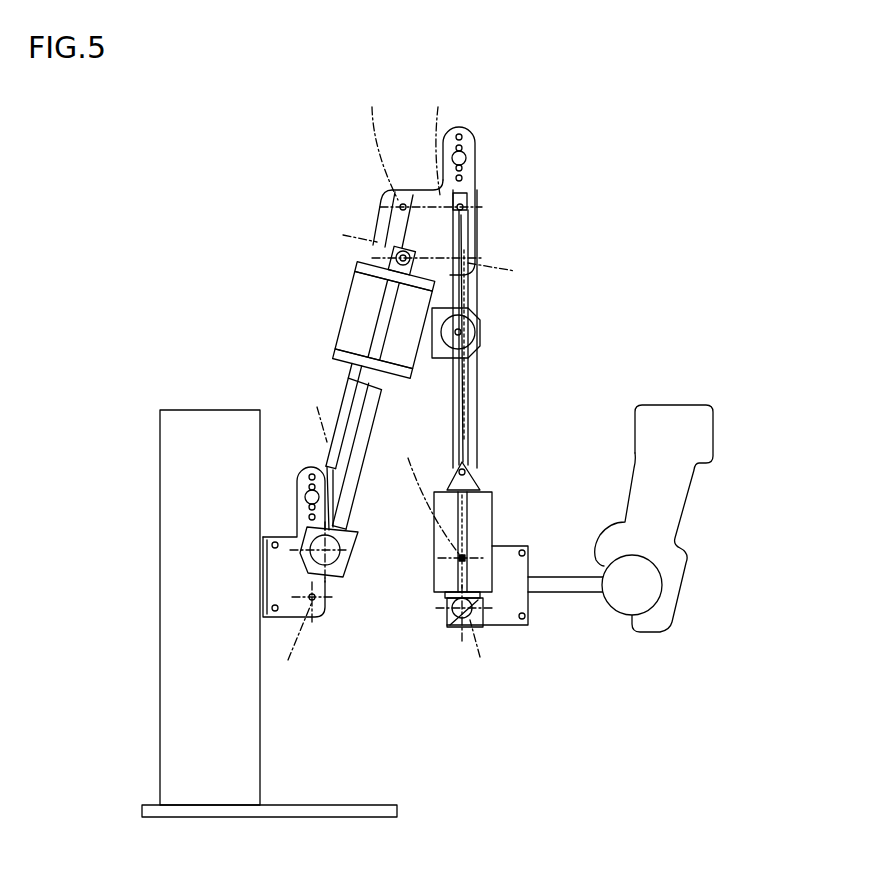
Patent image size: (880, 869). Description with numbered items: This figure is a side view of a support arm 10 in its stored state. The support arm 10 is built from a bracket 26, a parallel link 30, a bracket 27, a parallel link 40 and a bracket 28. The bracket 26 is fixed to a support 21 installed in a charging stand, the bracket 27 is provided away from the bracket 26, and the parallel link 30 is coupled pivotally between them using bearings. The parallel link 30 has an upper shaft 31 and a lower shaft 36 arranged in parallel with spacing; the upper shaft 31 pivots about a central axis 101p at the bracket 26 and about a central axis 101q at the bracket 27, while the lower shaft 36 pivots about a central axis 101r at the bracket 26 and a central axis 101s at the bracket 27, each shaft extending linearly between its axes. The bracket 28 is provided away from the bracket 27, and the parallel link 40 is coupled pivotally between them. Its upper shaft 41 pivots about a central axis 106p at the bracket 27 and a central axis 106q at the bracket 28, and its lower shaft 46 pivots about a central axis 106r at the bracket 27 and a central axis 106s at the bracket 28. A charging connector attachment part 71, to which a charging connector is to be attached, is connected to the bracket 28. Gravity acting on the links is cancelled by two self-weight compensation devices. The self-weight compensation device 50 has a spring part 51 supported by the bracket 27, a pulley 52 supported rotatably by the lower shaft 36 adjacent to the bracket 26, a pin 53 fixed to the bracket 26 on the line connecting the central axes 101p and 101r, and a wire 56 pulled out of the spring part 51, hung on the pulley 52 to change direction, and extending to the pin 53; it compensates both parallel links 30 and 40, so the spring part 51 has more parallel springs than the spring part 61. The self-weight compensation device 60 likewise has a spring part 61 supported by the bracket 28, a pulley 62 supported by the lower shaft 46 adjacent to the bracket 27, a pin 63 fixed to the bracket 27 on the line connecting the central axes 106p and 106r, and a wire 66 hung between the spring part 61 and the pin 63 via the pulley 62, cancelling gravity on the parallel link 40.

The support arm 10 is at (192, 142).
The support 21 is at (185, 566).
The bracket 26 is at (300, 470).
The bracket 27 is at (478, 185).
The bracket 28 is at (513, 600).
The parallel link 30 is at (372, 684).
The upper shaft 31 is at (355, 487).
The lower shaft 36 is at (347, 445).
The parallel link 40 is at (545, 366).
The upper shaft 41 is at (462, 383).
The lower shaft 46 is at (470, 413).
The self-weight compensation device 50 is at (345, 298).
The spring part 51 is at (360, 324).
The pulley 52 is at (333, 578).
The pin 53 is at (300, 497).
The wire 56 is at (343, 578).
The self-weight compensation device 60 is at (497, 503).
The spring part 61 is at (485, 525).
The pulley 62 is at (463, 332).
The pin 63 is at (466, 158).
The wire 66 is at (461, 448).
The charging connector attachment part 71 is at (670, 502).
The central axis 101p is at (313, 414).
The central axis 101q is at (374, 141).
The central axis 101r is at (289, 642).
The central axis 101s is at (334, 237).
The central axis 106p is at (439, 138).
The central axis 106q is at (425, 497).
The central axis 106r is at (514, 272).
The central axis 106s is at (482, 651).